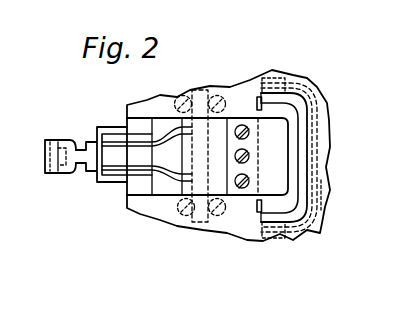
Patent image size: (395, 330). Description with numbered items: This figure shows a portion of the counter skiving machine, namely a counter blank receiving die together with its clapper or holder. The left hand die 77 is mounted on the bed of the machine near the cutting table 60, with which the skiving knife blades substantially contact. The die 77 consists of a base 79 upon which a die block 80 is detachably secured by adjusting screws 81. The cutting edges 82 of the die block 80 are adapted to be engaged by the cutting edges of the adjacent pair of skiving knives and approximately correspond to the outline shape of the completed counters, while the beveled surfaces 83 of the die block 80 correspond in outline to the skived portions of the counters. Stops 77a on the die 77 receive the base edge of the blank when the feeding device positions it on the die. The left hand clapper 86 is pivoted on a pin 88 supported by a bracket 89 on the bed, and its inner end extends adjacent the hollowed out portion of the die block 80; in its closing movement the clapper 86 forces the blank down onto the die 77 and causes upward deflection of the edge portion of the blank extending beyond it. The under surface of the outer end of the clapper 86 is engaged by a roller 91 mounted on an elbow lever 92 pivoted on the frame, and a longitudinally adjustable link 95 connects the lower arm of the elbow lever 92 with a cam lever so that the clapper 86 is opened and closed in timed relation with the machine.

The cutting table 60 is at (323, 228).
The left hand die 77 is at (296, 228).
The stops 77a is at (257, 104).
The base 79 is at (322, 195).
The die block 80 is at (317, 98).
The adjusting screws 81 is at (330, 147).
The cutting edges 82 is at (300, 108).
The beveled surfaces 83 is at (278, 100).
The left hand clapper 86 is at (273, 185).
The pins 88 is at (202, 222).
The brackets 89 is at (197, 91).
The rollers 91 is at (115, 177).
The elbow levers 92 is at (62, 172).
The longitudinally adjustable links 95 is at (44, 153).